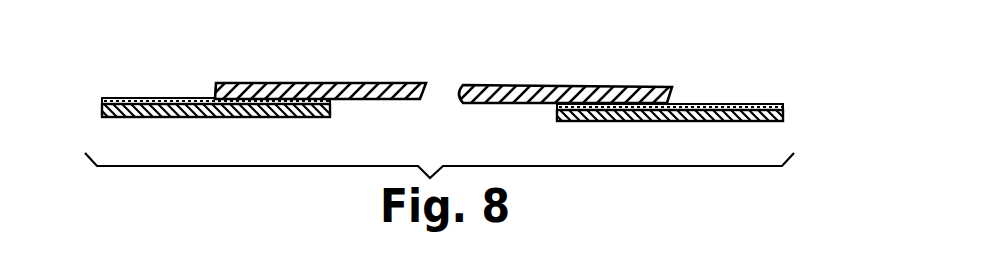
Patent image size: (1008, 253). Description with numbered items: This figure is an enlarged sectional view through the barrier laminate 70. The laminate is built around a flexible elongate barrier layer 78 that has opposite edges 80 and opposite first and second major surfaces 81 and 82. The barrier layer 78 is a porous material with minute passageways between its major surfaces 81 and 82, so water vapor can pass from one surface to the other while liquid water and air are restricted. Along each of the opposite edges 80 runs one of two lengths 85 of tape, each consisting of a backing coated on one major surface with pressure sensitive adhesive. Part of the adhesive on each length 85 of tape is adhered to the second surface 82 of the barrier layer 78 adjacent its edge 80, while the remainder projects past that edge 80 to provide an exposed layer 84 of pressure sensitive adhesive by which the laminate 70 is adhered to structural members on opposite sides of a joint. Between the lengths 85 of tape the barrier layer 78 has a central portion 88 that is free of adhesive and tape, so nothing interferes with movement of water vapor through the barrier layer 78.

The barrier laminate 70 is at (617, 58).
The barrier layer 78 is at (565, 80).
The opposite edges 80 is at (215, 94).
The first major surface 81 is at (375, 83).
The second major surface 82 is at (518, 104).
The exposed layer of pressure sensitive adhesive 84 is at (133, 99).
The lengths of tape 85 is at (173, 117).
The central portion 88 is at (508, 85).